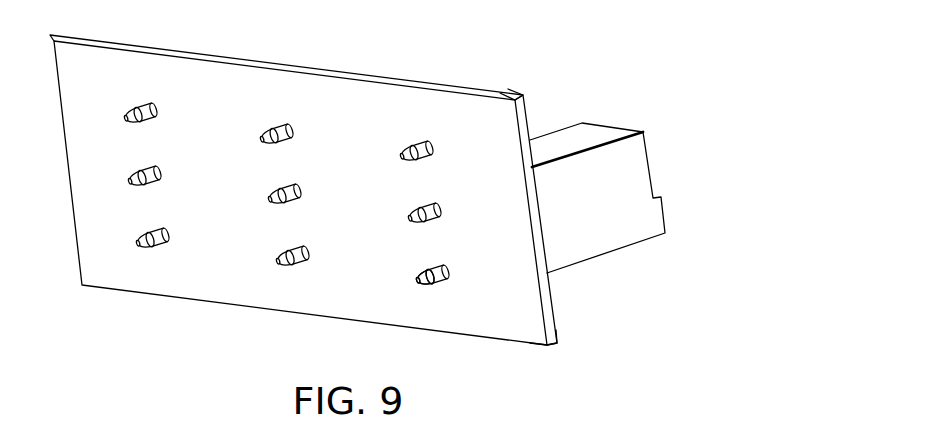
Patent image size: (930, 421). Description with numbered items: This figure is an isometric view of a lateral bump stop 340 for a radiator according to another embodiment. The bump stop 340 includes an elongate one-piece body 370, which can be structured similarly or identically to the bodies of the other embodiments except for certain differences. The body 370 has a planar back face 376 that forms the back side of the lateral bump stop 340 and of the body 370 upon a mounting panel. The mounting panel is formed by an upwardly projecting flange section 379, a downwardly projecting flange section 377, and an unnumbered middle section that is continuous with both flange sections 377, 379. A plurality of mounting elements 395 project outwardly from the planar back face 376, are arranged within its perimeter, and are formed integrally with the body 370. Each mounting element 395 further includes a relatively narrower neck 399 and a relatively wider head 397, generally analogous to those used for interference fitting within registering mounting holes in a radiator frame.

The lateral bump stop 340 is at (688, 112).
The elongate one-piece body 370 is at (667, 233).
The planar back face 376 is at (200, 278).
The downwardly projecting flange section 377 is at (553, 344).
The upwardly projecting flange section 379 is at (522, 94).
The mounting element 395 is at (445, 292).
The head 397 is at (425, 268).
The neck 399 is at (433, 200).